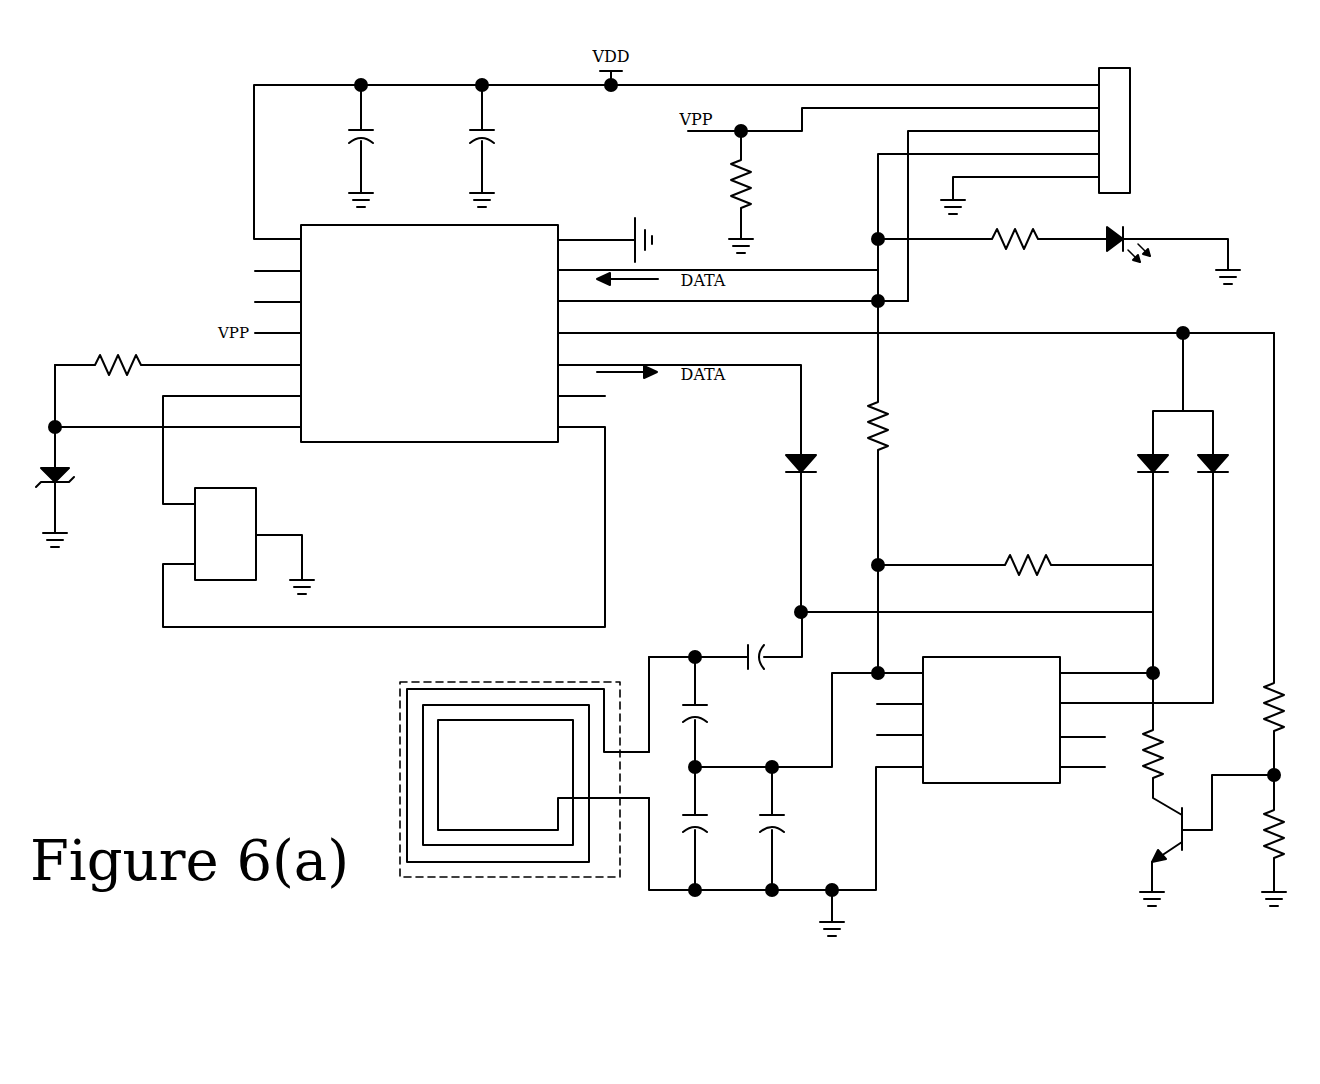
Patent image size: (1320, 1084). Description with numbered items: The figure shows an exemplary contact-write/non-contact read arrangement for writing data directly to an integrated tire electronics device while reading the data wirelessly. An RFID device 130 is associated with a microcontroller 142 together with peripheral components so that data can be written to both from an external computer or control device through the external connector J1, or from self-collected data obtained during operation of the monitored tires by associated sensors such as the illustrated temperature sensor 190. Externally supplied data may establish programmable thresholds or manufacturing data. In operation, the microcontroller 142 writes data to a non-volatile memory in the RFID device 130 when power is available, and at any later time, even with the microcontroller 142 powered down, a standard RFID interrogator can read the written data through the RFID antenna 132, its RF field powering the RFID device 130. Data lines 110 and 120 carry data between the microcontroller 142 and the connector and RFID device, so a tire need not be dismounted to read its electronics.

The data input line 110 is at (818, 270).
The data output line 120 is at (801, 392).
The RFID device 130 is at (1013, 783).
The RFID antenna 132 is at (400, 798).
The microcontroller 142 is at (301, 262).
The temperature sensor 190 is at (256, 519).
The external connector J1 is at (1130, 155).